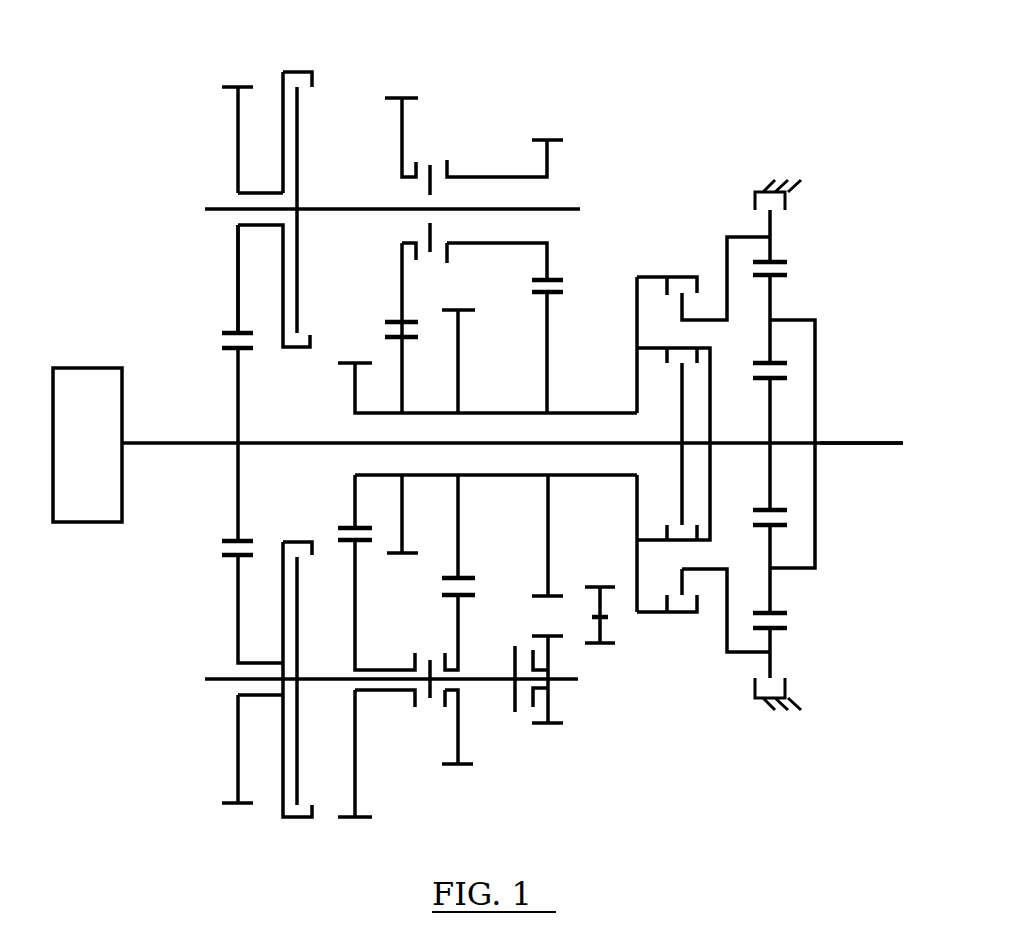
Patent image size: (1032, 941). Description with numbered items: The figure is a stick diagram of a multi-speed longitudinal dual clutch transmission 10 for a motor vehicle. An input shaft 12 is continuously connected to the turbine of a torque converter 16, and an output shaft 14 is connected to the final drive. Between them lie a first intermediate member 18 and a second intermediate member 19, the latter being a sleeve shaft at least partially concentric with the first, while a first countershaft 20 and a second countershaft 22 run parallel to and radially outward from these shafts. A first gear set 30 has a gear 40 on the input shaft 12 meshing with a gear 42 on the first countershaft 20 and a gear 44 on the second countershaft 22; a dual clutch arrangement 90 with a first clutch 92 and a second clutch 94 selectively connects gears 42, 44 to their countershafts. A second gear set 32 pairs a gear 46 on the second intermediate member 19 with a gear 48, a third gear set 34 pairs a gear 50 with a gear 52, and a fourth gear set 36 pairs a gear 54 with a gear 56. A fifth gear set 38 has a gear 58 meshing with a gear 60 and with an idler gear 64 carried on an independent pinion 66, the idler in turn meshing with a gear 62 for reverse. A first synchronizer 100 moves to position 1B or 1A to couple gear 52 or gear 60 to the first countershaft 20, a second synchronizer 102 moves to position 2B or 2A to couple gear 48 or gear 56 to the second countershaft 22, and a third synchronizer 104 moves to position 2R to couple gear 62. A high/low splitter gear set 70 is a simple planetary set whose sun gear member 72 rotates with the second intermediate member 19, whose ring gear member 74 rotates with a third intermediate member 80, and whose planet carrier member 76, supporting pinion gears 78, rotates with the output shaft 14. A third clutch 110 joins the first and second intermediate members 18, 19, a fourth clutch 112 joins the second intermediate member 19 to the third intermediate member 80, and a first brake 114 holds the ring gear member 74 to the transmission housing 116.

The multi-speed transmission 10 is at (708, 101).
The input shaft 12 is at (175, 443).
The output shaft 14 is at (857, 450).
The torque converter 16 is at (102, 461).
The first intermediate member 18 is at (255, 443).
The second intermediate member 19 is at (585, 412).
The first countershaft 20 is at (210, 209).
The second countershaft 22 is at (215, 683).
The first gear set 30 is at (170, 578).
The second gear set 32 is at (337, 520).
The third gear set 34 is at (389, 311).
The fourth gear set 36 is at (473, 572).
The fifth gear set 38 is at (577, 273).
The gear 40 is at (237, 373).
The gear 42 is at (238, 262).
The gear 44 is at (236, 609).
The gear 46 is at (353, 397).
The gear 48 is at (355, 600).
The gear 50 is at (403, 387).
The gear 52 is at (403, 297).
The gear 54 is at (462, 513).
The gear 56 is at (458, 627).
The gear 58 is at (547, 328).
The gear 60 is at (545, 265).
The gear 62 is at (546, 650).
The idler gear 64 is at (595, 600).
The pinion 66 is at (602, 620).
The high/low splitter gear set 70 is at (838, 241).
The sun gear member 72 is at (772, 408).
The ring gear member 74 is at (772, 248).
The planet carrier member 76 is at (815, 343).
The pinion gears 78 is at (772, 303).
The third intermediate member 80 is at (727, 248).
The dual clutch arrangement 90 is at (207, 69).
The first clutch 92 is at (297, 72).
The second clutch 94 is at (297, 818).
The first synchronizer 100 is at (428, 188).
The second synchronizer 102 is at (415, 691).
The third synchronizer 104 is at (515, 712).
The third clutch 110 is at (700, 362).
The fourth clutch 112 is at (667, 288).
The first brake 114 is at (787, 688).
The transmission housing 116 is at (763, 190).
The synchronizer position 1A is at (455, 140).
The synchronizer position 1B is at (420, 140).
The synchronizer position 2A is at (443, 637).
The synchronizer position 2B is at (407, 637).
The synchronizer position 2R is at (518, 622).